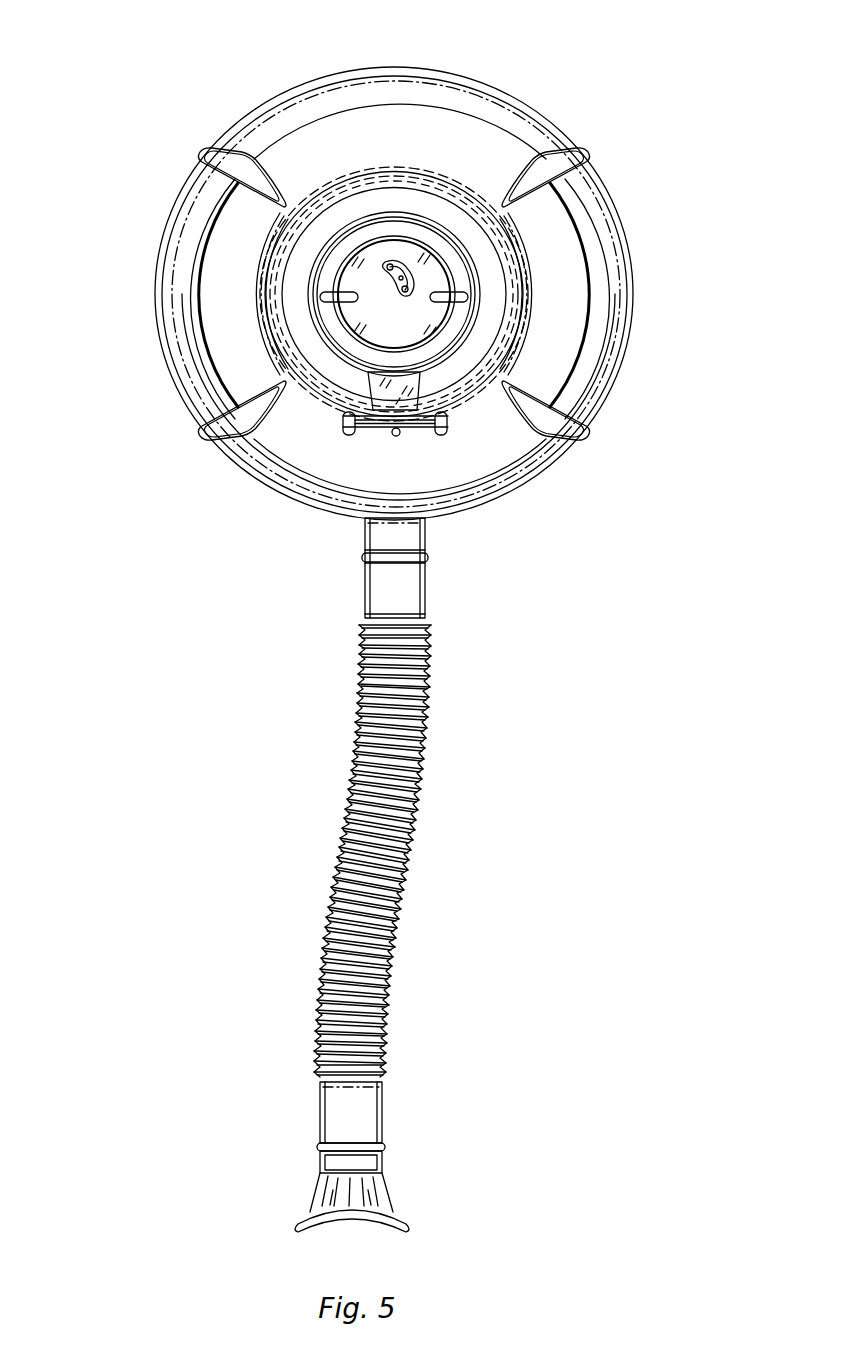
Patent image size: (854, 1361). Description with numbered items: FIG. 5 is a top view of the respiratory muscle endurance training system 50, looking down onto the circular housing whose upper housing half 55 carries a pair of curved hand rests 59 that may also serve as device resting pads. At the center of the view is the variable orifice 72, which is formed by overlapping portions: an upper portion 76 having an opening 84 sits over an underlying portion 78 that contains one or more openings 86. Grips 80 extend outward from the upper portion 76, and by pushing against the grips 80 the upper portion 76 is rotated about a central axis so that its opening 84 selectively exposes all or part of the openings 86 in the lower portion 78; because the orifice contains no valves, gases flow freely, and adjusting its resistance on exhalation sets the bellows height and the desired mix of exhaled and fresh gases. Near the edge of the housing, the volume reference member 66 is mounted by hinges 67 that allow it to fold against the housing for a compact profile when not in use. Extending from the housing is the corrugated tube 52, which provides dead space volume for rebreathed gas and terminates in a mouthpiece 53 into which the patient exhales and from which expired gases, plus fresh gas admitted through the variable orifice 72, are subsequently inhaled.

The respiratory muscle endurance training (RMET) system 50 is at (570, 668).
The tube 52 is at (416, 831).
The mouthpiece 53 is at (383, 1163).
The housing half 55 is at (525, 447).
The hand rests 59 is at (592, 306).
The volume reference member 66 is at (420, 428).
The hinges 67 is at (343, 427).
The variable orifice 72 is at (379, 256).
The upper portion 76 is at (399, 256).
The underlying portion 78 is at (414, 268).
The grips 80 is at (331, 292).
The opening 84 is at (424, 286).
The openings 86 is at (380, 300).